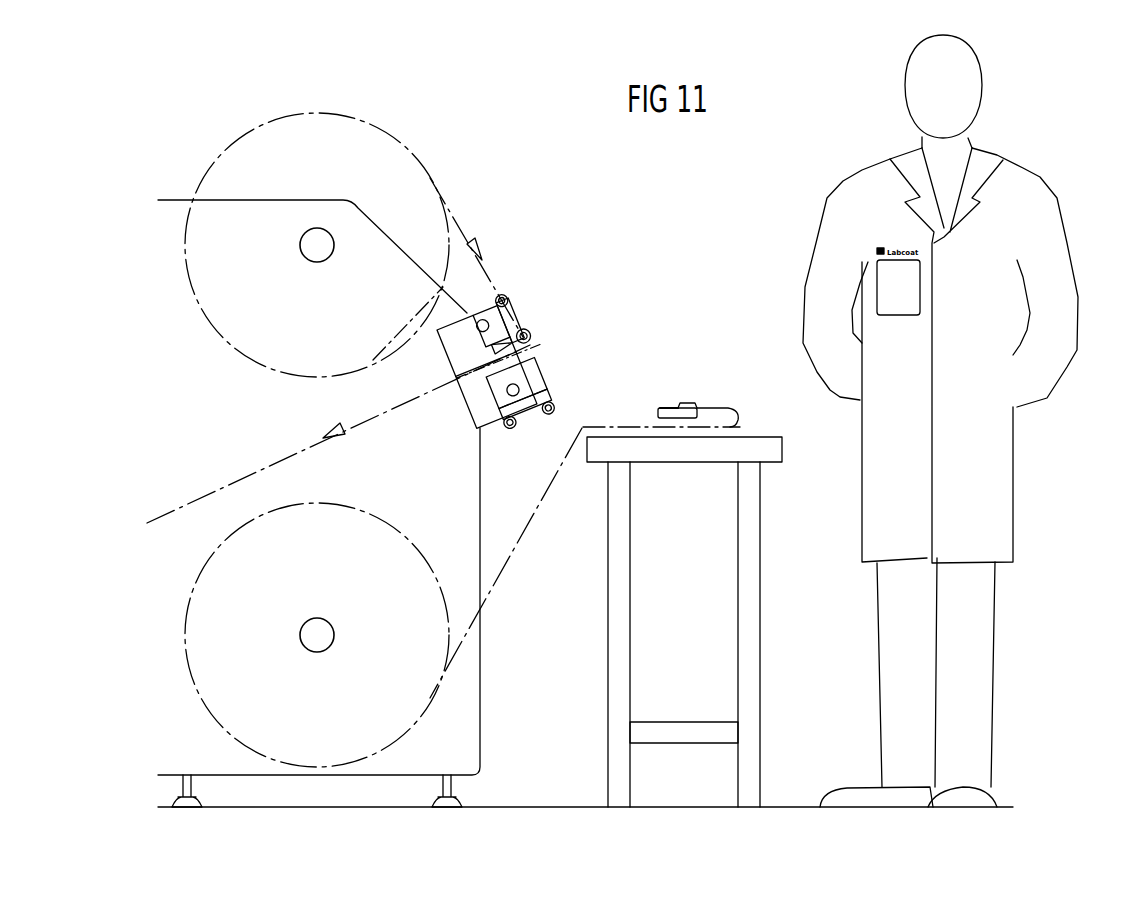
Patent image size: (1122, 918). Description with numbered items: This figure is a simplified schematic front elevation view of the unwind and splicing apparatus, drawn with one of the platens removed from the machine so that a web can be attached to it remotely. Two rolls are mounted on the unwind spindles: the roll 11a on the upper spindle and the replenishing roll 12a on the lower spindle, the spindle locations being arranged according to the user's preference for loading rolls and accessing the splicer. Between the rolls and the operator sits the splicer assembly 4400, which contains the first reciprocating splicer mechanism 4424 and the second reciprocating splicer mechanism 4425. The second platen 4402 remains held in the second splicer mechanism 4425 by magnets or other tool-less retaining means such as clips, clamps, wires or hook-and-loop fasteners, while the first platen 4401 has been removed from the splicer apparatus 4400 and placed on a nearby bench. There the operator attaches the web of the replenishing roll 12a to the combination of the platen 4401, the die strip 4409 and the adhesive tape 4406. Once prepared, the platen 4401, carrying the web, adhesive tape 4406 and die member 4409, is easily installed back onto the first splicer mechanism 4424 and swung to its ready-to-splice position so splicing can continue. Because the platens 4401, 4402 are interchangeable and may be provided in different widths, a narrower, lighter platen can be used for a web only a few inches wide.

The roll 11a is at (451, 210).
The replenishing roll 12a is at (460, 648).
The splicer assembly 4400 is at (577, 354).
The first platen 4401 is at (658, 413).
The second platen 4402 is at (532, 350).
The adhesive tape 4406 is at (670, 405).
The die strip 4409 is at (687, 403).
The first splicer mechanism 4424 is at (478, 413).
The second splicer mechanism 4425 is at (458, 369).